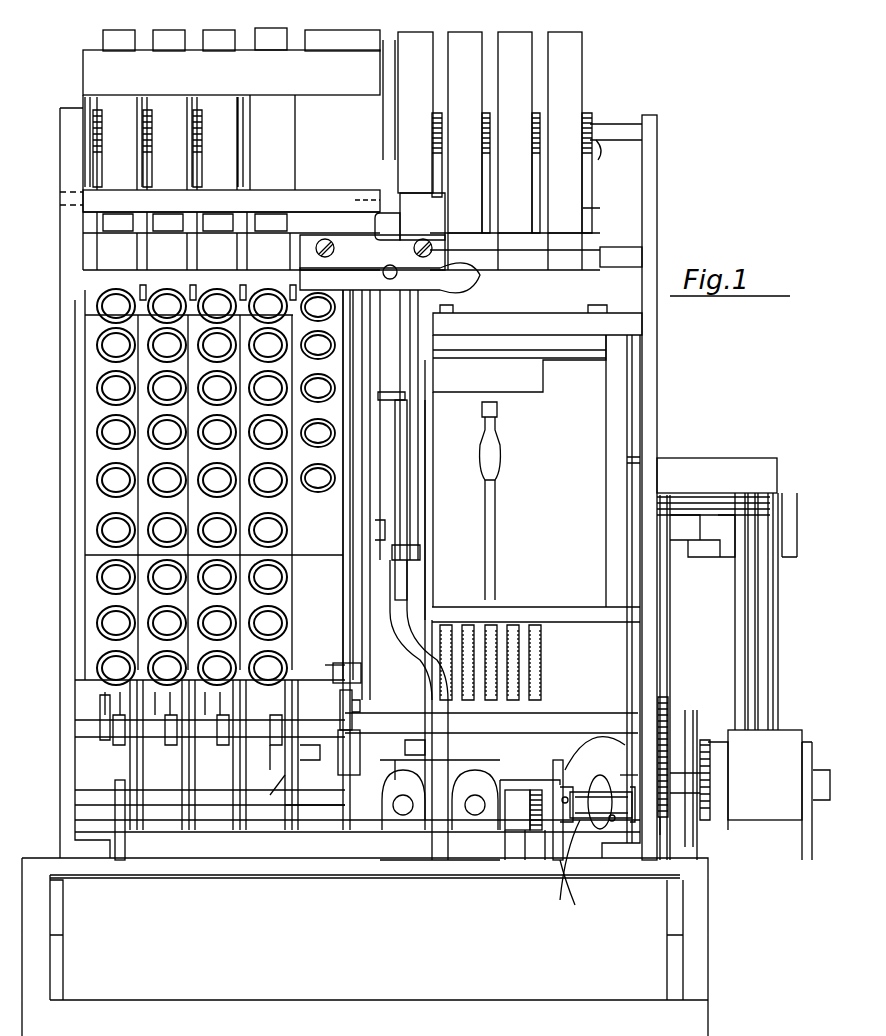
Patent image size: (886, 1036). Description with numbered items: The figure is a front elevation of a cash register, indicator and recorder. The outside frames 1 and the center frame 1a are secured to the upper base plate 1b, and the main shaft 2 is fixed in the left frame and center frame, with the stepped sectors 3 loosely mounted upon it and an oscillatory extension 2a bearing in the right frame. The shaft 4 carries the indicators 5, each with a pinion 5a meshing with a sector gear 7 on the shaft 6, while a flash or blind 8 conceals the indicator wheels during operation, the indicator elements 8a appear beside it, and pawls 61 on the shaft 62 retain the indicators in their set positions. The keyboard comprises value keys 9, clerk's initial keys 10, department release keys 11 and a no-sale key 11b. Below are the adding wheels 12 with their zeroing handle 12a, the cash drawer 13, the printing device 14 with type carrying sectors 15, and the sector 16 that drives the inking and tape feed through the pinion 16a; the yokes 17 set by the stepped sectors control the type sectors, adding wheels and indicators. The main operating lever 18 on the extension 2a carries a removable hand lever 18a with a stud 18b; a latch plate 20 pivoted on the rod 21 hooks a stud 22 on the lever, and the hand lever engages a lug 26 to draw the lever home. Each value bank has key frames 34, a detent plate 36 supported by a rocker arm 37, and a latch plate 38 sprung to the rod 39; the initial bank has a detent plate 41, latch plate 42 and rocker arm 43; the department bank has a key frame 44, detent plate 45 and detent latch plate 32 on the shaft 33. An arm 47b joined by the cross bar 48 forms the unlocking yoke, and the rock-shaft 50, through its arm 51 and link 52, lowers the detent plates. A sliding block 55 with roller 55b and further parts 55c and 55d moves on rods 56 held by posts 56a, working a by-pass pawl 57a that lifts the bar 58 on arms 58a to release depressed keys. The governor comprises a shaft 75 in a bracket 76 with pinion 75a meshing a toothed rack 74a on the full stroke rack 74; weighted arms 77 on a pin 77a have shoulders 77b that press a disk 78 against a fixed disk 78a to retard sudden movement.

The outside frames 1 is at (60, 621).
The center frame 1a is at (491, 720).
The upper base plate 1b is at (520, 860).
The main shaft 2 is at (75, 525).
The oscillatory extension of the main shaft 2a is at (425, 518).
The stepped sectors 3 is at (201, 755).
The indicator shaft 4 is at (625, 124).
The indicators 5 is at (260, 30).
The indicator pinion 5a is at (604, 156).
The sector gear shaft 6 is at (628, 252).
The sector gears 7 is at (248, 230).
The flash or blind 8 is at (231, 72).
The totalizer wheels 8a is at (85, 108).
The value keys 9 is at (128, 292).
The clerk's initial keys 10 is at (282, 292).
The department release keys 11 is at (318, 492).
The no-sale key 11b is at (345, 300).
The adding wheels 12 is at (541, 670).
The handle 12a is at (498, 440).
The cash drawer 13 is at (325, 943).
The printing device 14 is at (775, 862).
The type carrying sectors 15 is at (780, 662).
The inking and tape feeding sector 16 is at (670, 635).
The pinion 16a is at (660, 822).
The yokes 17 is at (585, 635).
The main operating lever 18 is at (398, 471).
The hand lever 18a is at (410, 436).
The stud 18b is at (398, 395).
The latch plate 20 is at (398, 585).
The rod 21 is at (347, 673).
The stud 22 is at (374, 528).
The lug 26 is at (412, 556).
The detent latch plate 32 is at (343, 625).
The shaft 33 is at (272, 808).
The key frames 34 is at (214, 551).
The detent plate 36 is at (130, 770).
The rocker arms 37 is at (126, 740).
The latch plate 38 is at (204, 767).
The rod 39 is at (485, 320).
The initial detent plate 41 is at (271, 784).
The initial latch plate 42 is at (308, 763).
The rocker arm 43 is at (266, 757).
The key frame 44 is at (326, 560).
The detent plate 45 is at (310, 749).
The arm 47b is at (95, 706).
The cross bar 48 is at (318, 656).
The rock-shaft 50 is at (210, 728).
The arm 51 is at (349, 752).
The link 52 is at (360, 700).
The sliding block 55 is at (521, 793).
The roller 55b is at (408, 762).
The ratchet 55c is at (510, 790).
The block 55d is at (505, 795).
The parallel rods 56 is at (402, 815).
The upright flanges or posts 56a is at (455, 858).
The by-pass pawl 57a is at (410, 742).
The bar 58 is at (228, 820).
The arms 58a is at (115, 827).
The pawls 61 is at (200, 180).
The shaft 62 is at (355, 203).
The full stroke rack 74 is at (525, 845).
The toothed rack 74a is at (548, 860).
The governor shaft 75 is at (595, 810).
The pinion 75a is at (590, 753).
The bracket 76 is at (555, 775).
The weighted governor arms 77 is at (587, 792).
The pin 77a is at (586, 773).
The shoulder 77b is at (580, 882).
The disk 78 is at (624, 765).
The disk 78a is at (576, 887).